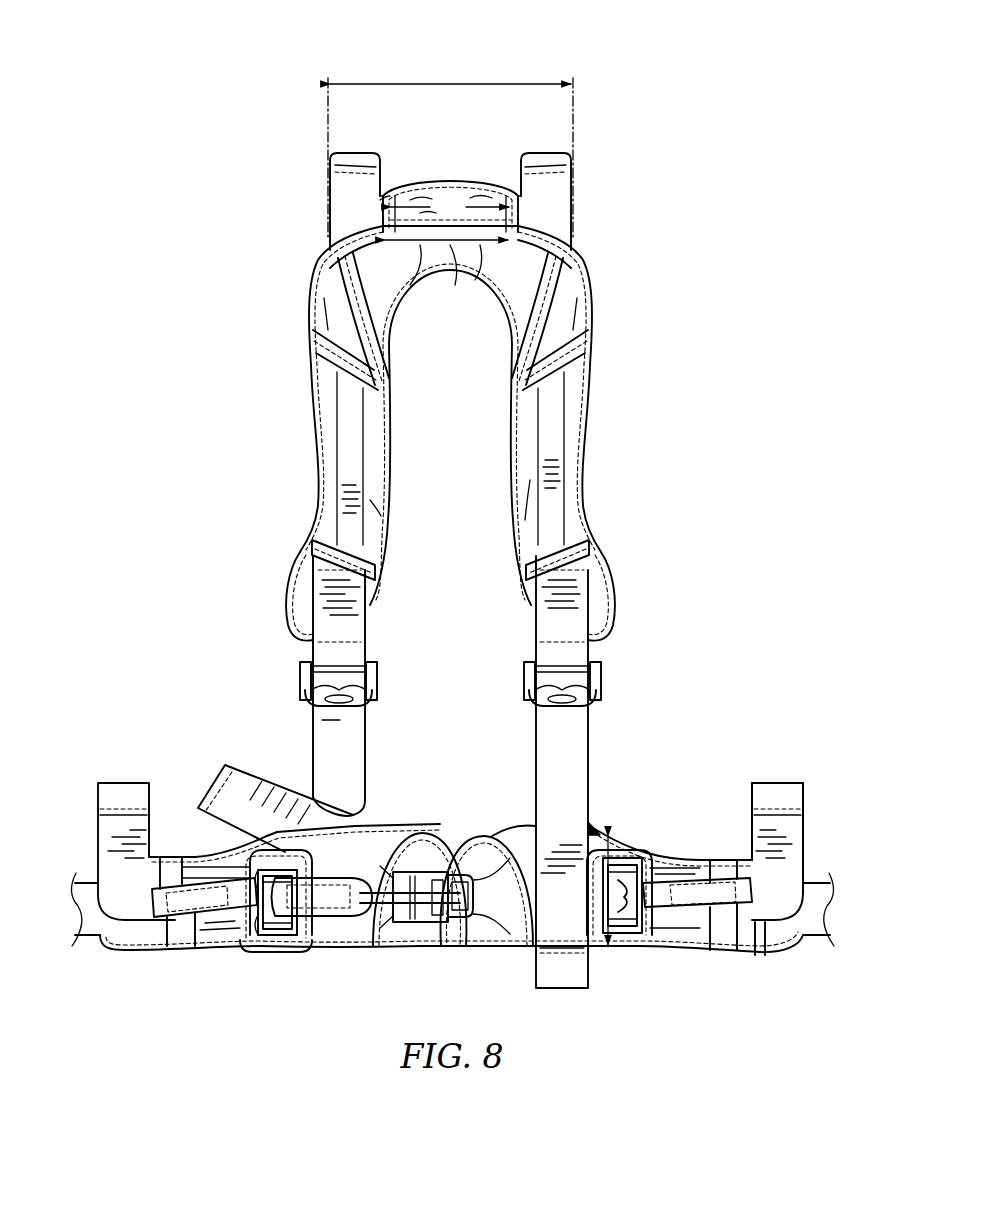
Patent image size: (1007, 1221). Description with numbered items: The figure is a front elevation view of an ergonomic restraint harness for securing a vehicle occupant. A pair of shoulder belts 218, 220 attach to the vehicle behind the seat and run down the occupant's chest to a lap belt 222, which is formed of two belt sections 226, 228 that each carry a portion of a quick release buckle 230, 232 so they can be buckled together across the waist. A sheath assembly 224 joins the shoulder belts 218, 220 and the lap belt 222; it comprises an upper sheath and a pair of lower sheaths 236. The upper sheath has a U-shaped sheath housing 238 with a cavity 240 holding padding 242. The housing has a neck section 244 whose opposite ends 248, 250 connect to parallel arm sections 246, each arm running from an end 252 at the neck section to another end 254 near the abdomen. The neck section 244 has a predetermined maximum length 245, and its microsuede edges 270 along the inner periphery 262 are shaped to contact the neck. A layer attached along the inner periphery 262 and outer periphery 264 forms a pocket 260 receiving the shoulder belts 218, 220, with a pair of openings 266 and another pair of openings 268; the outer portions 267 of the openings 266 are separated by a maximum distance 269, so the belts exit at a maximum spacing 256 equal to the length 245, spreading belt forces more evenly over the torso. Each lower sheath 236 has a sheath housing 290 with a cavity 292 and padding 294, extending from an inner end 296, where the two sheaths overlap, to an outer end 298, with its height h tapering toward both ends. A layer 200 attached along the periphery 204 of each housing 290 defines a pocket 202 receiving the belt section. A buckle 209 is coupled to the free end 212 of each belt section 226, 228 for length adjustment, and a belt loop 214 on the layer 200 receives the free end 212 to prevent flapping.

The layer 200 is at (445, 880).
The pocket 202 is at (423, 850).
The periphery 204 is at (452, 918).
The buckle 209 is at (277, 945).
The end 212 is at (250, 782).
The belt loop 214 is at (178, 940).
The shoulder belt 218 is at (425, 343).
The shoulder belt 220 is at (425, 343).
The lap belt 222 is at (814, 857).
The sheath assembly 224 is at (249, 960).
The belt section 226 is at (405, 826).
The belt section 228 is at (799, 810).
The quick release buckle portion 230 is at (448, 927).
The quick release buckle portion 232 is at (420, 930).
The lower sheath 236 is at (452, 918).
The sheath housing 238 is at (392, 358).
The cavity 240 is at (377, 346).
The padding 242 is at (302, 302).
The neck section 244 is at (463, 172).
The maximum length 245 is at (447, 218).
The arm section 246 is at (425, 343).
The end 248 is at (383, 160).
The end 250 is at (517, 160).
The end 252 is at (312, 160).
The end 254 is at (290, 604).
The maximum spacing 256 is at (450, 423).
The pocket 260 is at (389, 192).
The inner periphery 262 is at (388, 337).
The outer periphery 264 is at (305, 400).
The opening 266 is at (425, 343).
The outer portion 267 is at (470, 84).
The opening 268 is at (311, 552).
The maximum distance 269 is at (425, 343).
The edge 270 is at (433, 273).
The sheath housing 290 is at (576, 831).
The cavity 292 is at (576, 831).
The padding 294 is at (476, 864).
The inner end 296 is at (452, 823).
The outer end 298 is at (85, 873).
The height h is at (619, 880).